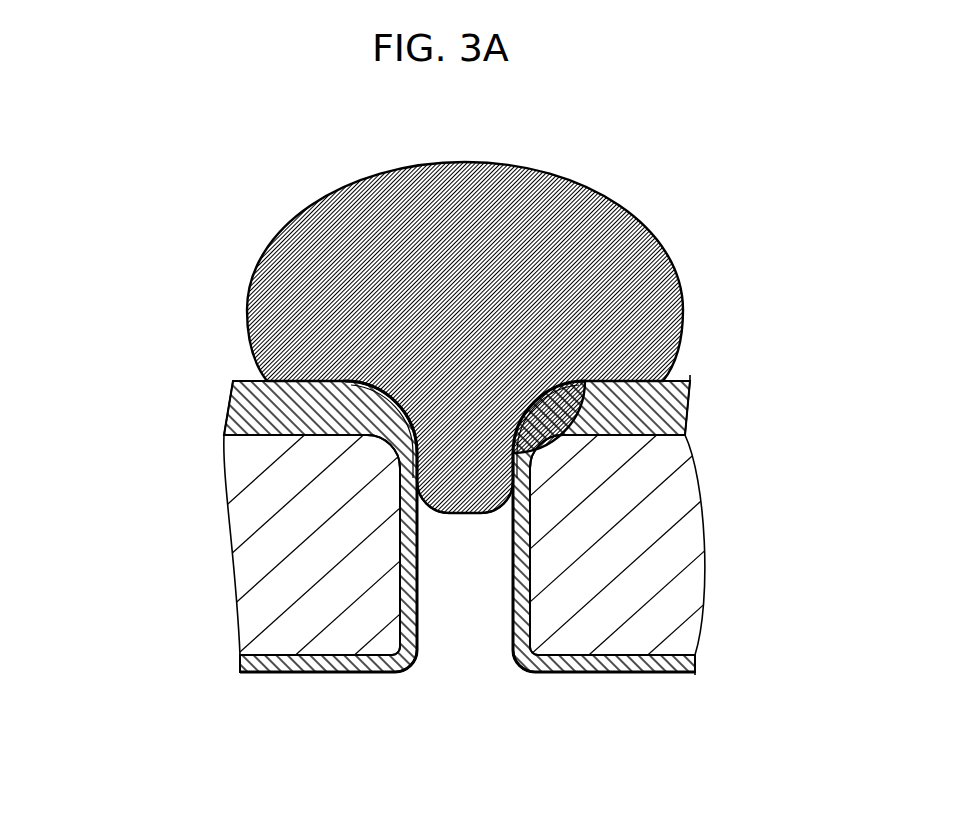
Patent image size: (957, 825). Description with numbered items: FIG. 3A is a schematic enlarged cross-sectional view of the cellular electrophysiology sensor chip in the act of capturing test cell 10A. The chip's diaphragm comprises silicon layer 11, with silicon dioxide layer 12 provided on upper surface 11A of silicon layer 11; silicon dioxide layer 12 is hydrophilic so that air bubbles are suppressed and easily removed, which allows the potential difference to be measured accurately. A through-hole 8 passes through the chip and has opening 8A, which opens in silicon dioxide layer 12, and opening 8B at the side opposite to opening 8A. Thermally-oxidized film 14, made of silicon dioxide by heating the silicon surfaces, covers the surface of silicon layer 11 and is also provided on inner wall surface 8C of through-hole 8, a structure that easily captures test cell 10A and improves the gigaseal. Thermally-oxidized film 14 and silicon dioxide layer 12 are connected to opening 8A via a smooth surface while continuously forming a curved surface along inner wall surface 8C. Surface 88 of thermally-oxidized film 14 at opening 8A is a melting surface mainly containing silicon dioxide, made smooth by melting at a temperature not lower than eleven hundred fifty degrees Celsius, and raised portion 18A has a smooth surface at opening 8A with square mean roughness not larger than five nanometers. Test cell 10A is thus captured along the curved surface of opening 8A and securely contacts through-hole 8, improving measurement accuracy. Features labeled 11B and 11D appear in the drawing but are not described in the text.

The through-hole 8 is at (463, 628).
The opening 8A is at (470, 393).
The opening 8B is at (455, 665).
The inner wall surface 8C is at (432, 628).
The test cell 10A is at (622, 210).
The silicon layer 11 is at (240, 508).
The upper surface 11A is at (243, 375).
The insulating film on bottom surface 11B is at (313, 672).
The insulating film on top surface 11D is at (268, 378).
The silicon dioxide layer 12 is at (230, 403).
The thermally-oxidized film 14 is at (253, 673).
The raised portion 18A is at (352, 380).
The surface 88 is at (370, 381).